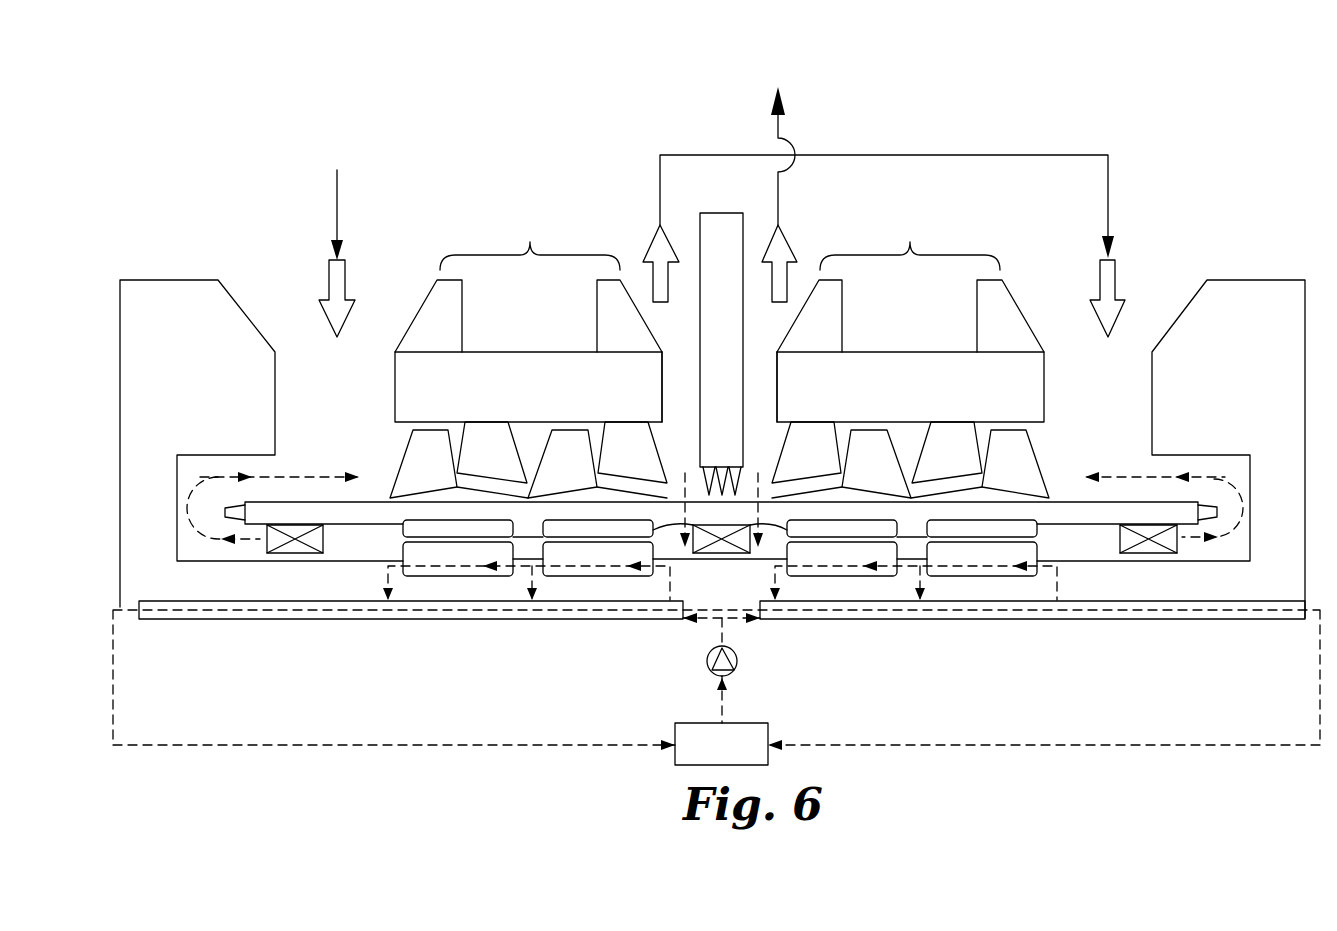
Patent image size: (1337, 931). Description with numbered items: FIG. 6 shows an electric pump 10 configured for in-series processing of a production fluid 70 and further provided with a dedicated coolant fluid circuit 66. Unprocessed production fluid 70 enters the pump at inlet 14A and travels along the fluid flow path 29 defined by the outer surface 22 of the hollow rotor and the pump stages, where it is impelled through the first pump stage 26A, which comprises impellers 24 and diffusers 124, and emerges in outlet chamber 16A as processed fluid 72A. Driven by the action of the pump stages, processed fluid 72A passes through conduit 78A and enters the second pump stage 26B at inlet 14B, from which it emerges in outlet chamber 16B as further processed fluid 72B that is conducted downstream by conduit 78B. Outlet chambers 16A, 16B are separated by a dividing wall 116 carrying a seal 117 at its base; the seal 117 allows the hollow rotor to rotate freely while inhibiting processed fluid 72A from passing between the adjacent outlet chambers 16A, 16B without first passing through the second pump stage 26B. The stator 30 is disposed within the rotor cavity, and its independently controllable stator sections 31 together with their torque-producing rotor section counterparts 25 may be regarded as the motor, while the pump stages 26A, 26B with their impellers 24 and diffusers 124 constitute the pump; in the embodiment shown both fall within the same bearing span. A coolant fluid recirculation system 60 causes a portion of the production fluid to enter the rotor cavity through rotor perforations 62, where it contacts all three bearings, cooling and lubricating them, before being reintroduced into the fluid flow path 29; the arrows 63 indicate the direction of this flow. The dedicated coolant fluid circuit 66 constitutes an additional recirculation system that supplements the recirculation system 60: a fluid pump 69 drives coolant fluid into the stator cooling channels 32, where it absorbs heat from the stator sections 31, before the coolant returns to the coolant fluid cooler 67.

The electric pump 10 is at (140, 132).
The inlet 14A is at (318, 389).
The inlet 14B is at (1086, 382).
The outlet chamber 16A is at (657, 336).
The outlet chamber 16B is at (748, 336).
The outer surface 22 is at (1068, 497).
The impellers 24 is at (858, 476).
The torque-producing rotor section 25 is at (828, 530).
The first pump stage 26A is at (528, 353).
The second pump stage 26B is at (910, 352).
The fluid flow path 29 is at (308, 475).
The stator 30 is at (697, 596).
The stator sections 31 is at (824, 574).
The stator cooling channels 32 is at (463, 574).
The coolant fluid recirculation system 60 is at (230, 542).
The rotor perforations 62 is at (685, 473).
The direction of fluid flow 63 is at (188, 522).
The dedicated coolant fluid circuit 66 is at (947, 745).
The coolant fluid cooler 67 is at (706, 762).
The fluid pump 69 is at (740, 662).
The unprocessed production fluid 70 is at (337, 235).
The processed fluid 72A is at (653, 243).
The further processed fluid 72B is at (782, 188).
The conduit 78A is at (1037, 155).
The conduit 78B is at (782, 125).
The dividing wall 116 is at (720, 222).
The seal 117 is at (720, 470).
The diffusers 124 is at (786, 471).